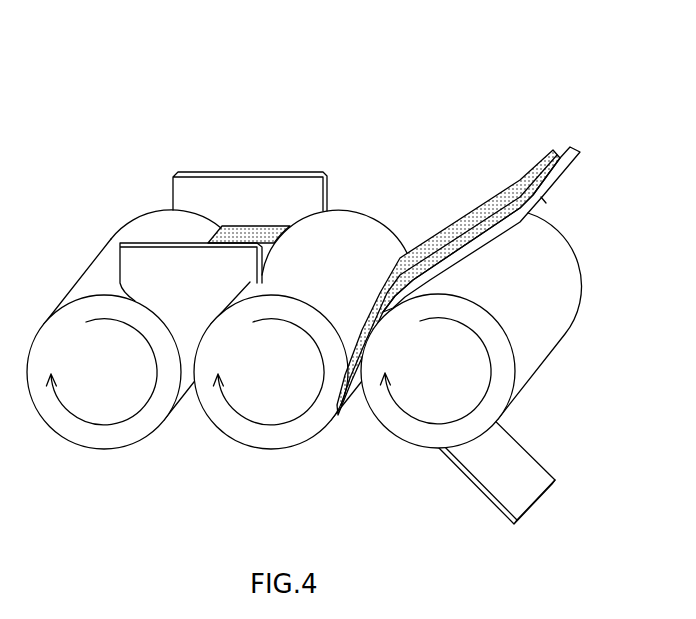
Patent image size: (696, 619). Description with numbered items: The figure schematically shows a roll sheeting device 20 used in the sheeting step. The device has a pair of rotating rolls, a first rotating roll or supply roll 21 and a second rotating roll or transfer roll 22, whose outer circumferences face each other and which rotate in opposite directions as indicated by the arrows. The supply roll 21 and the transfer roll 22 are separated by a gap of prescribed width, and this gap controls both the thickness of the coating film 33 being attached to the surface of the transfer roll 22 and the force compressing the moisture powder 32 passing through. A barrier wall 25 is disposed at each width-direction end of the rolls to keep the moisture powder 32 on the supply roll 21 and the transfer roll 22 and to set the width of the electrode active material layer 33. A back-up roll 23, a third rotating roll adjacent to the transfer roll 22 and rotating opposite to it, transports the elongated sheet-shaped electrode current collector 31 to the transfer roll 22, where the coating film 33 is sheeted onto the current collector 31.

The roll sheeting device 20 is at (343, 279).
The supply roll 21 is at (103, 441).
The transfer roll 22 is at (270, 441).
The back-up roll 23 is at (582, 268).
The barrier wall 25 is at (124, 240).
The electrode current collector 31 is at (563, 176).
The moisture powder 32 is at (243, 225).
The electrode active material layer 33 is at (508, 175).